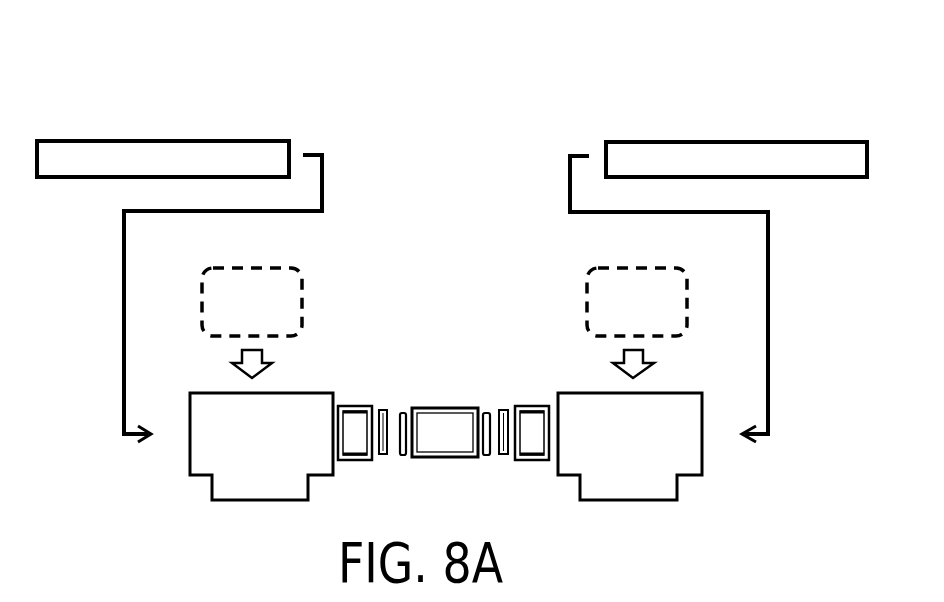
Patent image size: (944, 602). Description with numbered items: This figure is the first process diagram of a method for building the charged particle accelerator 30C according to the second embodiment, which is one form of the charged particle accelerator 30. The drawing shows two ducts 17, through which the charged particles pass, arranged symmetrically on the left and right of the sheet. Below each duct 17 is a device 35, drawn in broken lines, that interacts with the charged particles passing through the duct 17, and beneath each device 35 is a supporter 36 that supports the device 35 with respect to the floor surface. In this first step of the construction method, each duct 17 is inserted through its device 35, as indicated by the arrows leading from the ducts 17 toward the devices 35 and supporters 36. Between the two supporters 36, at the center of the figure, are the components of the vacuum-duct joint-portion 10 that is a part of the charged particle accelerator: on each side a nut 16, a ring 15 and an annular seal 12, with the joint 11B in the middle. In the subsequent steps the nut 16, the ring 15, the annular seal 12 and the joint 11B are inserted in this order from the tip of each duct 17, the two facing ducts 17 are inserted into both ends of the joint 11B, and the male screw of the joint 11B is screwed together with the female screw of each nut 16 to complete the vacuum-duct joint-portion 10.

The charged particle accelerator 30C is at (212, 68).
The charged particle accelerator 30 is at (452, 253).
The duct 17 is at (131, 141).
The device 35 is at (202, 301).
The supporter 36 is at (190, 462).
The vacuum-duct joint-portion 10 is at (575, 341).
The nut 16 is at (348, 405).
The ring 15 is at (383, 411).
The annular seal 12 is at (403, 412).
The joint 11B is at (440, 408).